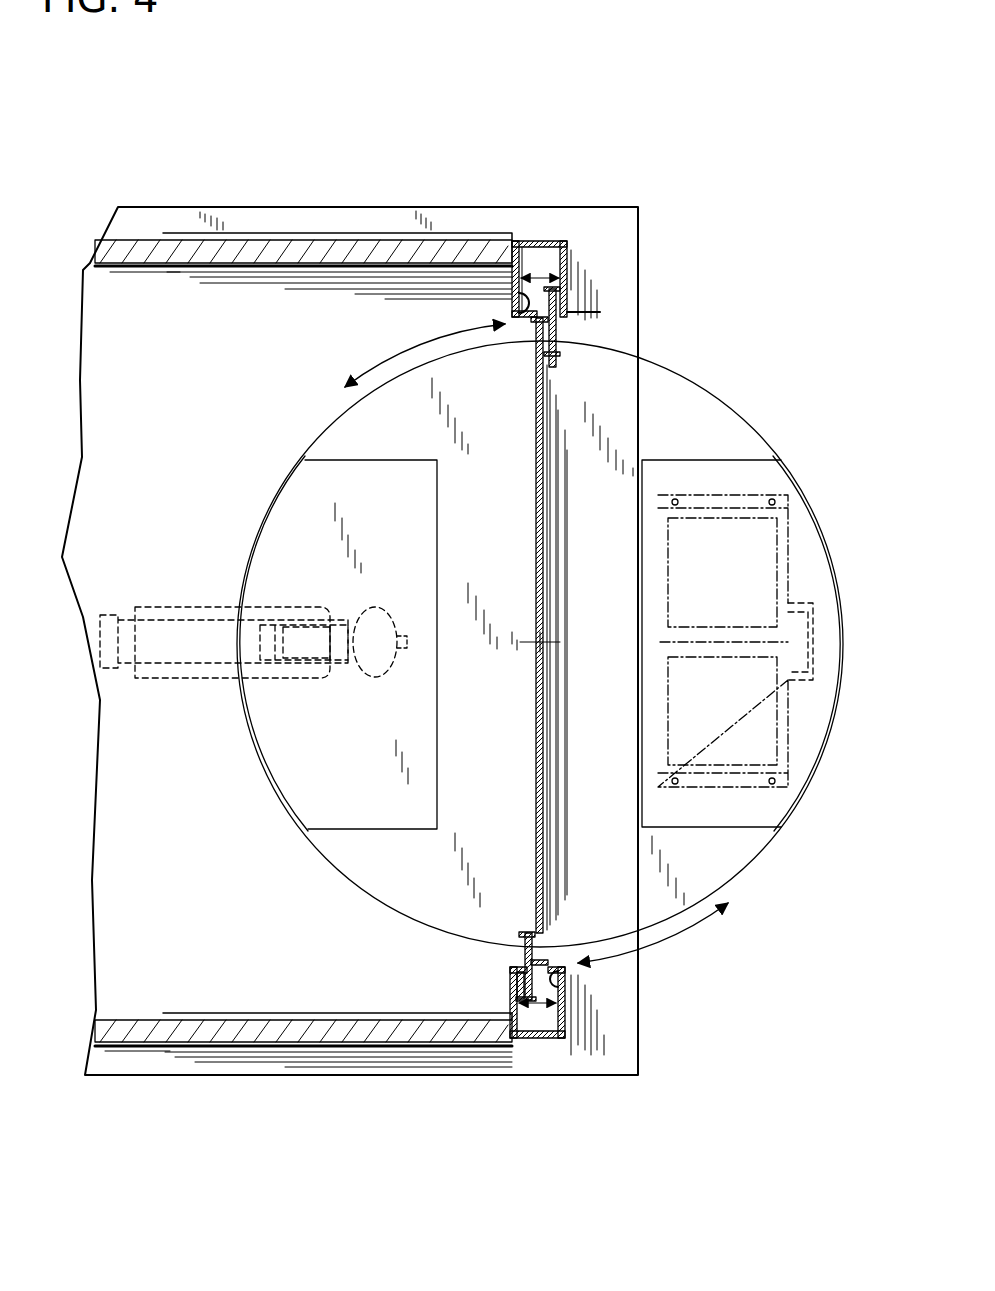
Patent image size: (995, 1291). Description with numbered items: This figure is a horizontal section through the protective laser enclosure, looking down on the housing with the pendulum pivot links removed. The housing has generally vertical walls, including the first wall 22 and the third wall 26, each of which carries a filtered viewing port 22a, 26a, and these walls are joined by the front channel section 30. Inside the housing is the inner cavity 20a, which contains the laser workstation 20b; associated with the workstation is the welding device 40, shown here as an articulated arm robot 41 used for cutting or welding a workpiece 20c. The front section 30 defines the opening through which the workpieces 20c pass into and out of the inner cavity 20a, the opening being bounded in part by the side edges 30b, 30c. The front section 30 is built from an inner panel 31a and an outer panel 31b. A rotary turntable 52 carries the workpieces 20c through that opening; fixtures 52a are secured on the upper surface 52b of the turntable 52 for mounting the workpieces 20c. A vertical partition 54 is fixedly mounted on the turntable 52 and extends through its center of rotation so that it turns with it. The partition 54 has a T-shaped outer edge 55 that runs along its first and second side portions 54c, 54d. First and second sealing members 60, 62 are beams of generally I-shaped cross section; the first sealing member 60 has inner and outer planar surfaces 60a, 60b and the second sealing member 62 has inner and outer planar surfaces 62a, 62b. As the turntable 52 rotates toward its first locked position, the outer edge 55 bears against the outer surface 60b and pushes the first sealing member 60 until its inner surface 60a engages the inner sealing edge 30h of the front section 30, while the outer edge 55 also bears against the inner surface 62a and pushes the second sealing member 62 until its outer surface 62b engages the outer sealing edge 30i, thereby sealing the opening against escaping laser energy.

The inner cavity 20a is at (147, 913).
The laser workstation 20b is at (358, 682).
The workpiece 20c is at (697, 707).
The first wall 22 is at (133, 1045).
The filtered viewing port 22a is at (245, 1043).
The third wall 26 is at (143, 240).
The filtered viewing port 26a is at (290, 240).
The front channel section 30 is at (557, 1043).
The side edge 30b is at (562, 963).
The side edge 30c is at (567, 312).
The inner sealing edge 30h is at (505, 300).
The outer sealing edge 30i is at (540, 980).
The inner panel 31a is at (512, 997).
The outer panel 31b is at (567, 1027).
The welding device 40 is at (183, 598).
The articulated arm robot 41 is at (198, 655).
The rotary turntable 52 is at (750, 413).
The fixture 52a is at (783, 533).
The upper surface 52b is at (770, 440).
The vertical partition 54 is at (543, 473).
The first side portion 54c is at (545, 948).
The second side portion 54d is at (540, 338).
The T-shaped outer edge 55 is at (533, 322).
The first sealing member 60 is at (533, 1037).
The inner planar surface 60a is at (518, 937).
The outer planar surface 60b is at (563, 1023).
The second sealing member 62 is at (560, 282).
The inner planar surface 62a is at (545, 272).
The outer planar surface 62b is at (560, 340).